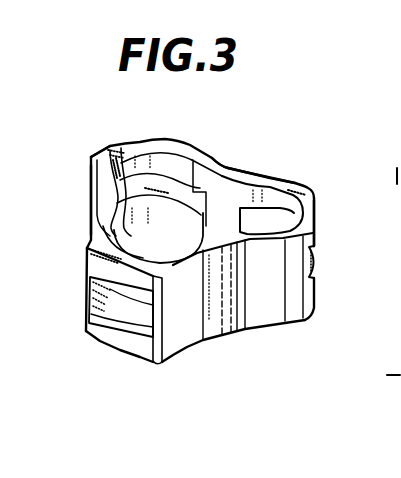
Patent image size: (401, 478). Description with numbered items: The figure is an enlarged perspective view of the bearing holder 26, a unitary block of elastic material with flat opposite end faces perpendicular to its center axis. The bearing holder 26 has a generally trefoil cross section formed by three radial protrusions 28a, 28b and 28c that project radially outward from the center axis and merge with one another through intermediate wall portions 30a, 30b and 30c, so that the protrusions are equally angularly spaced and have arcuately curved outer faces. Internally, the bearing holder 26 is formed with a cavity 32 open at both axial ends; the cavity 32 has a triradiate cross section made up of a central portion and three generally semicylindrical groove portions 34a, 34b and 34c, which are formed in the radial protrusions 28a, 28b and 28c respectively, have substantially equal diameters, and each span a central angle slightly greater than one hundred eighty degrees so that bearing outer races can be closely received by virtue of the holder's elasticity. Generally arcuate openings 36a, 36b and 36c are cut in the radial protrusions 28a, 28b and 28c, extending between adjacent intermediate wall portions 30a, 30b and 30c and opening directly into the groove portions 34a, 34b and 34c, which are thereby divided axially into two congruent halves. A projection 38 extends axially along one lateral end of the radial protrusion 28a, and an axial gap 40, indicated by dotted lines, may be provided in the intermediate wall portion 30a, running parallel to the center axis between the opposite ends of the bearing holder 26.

The bearing holder 26 is at (286, 171).
The radial protrusion 28a is at (83, 280).
The radial protrusion 28b is at (316, 190).
The radial protrusion 28c is at (122, 143).
The intermediate wall portion 30a is at (242, 327).
The intermediate wall portion 30b is at (235, 162).
The intermediate wall portion 30c is at (110, 200).
The cavity 32 is at (186, 195).
The semicylindrical groove portion 34a is at (136, 246).
The semicylindrical groove portion 34b is at (278, 218).
The semicylindrical groove portion 34c is at (158, 155).
The arcuate opening 36a is at (110, 315).
The arcuate opening 36b is at (315, 260).
The arcuate opening 36c is at (100, 154).
The projection 38 is at (156, 367).
The axial gap 40 is at (224, 327).